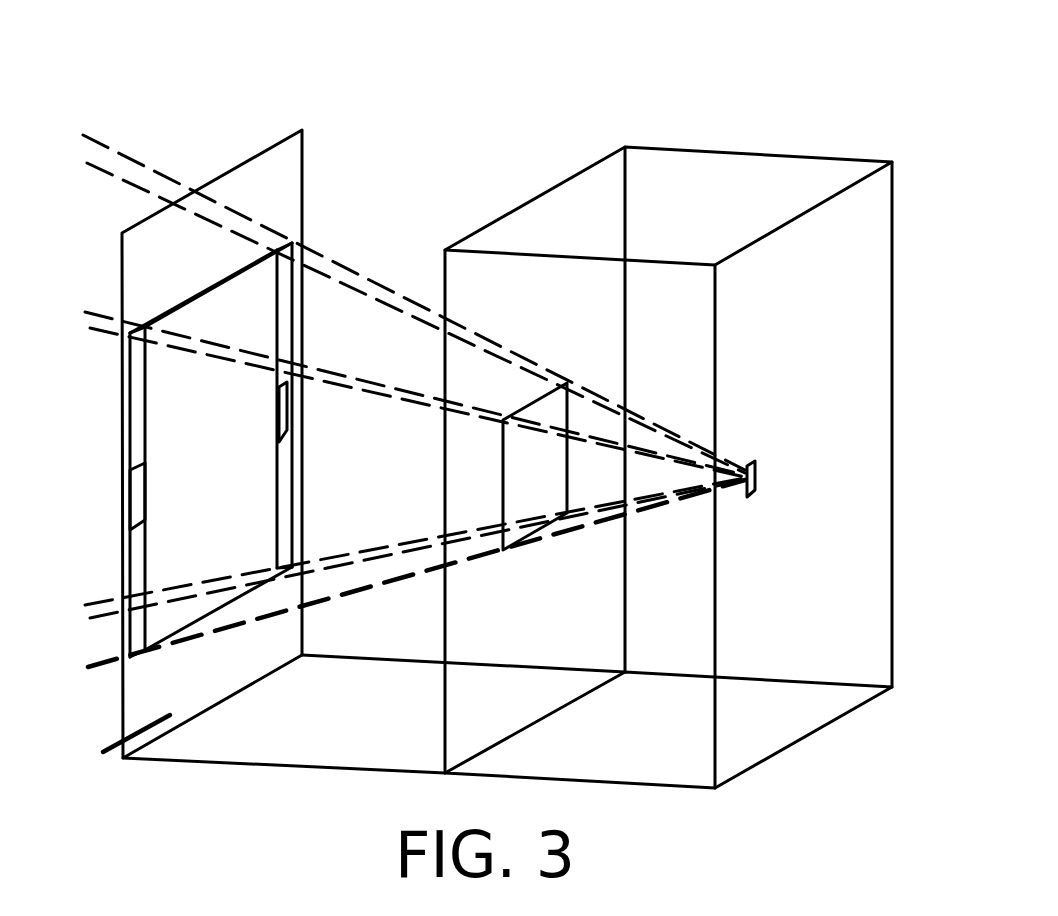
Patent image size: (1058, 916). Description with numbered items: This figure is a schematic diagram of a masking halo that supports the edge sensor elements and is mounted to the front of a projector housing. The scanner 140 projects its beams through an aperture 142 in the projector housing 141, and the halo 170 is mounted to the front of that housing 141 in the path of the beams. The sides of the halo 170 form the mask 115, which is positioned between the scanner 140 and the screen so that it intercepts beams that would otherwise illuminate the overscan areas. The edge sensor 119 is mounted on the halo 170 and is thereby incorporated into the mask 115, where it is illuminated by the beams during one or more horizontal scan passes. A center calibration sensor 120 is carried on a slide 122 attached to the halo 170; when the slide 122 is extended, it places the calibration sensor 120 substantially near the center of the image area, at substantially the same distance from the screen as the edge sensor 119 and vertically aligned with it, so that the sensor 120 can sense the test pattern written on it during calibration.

The mask 115 is at (259, 450).
The edge sensor 119 is at (341, 420).
The center calibration sensor 120 is at (190, 507).
The slide 122 is at (188, 764).
The scanner 140 is at (803, 506).
The projector housing 141 is at (668, 399).
The aperture 142 is at (664, 432).
The halo 170 is at (296, 406).